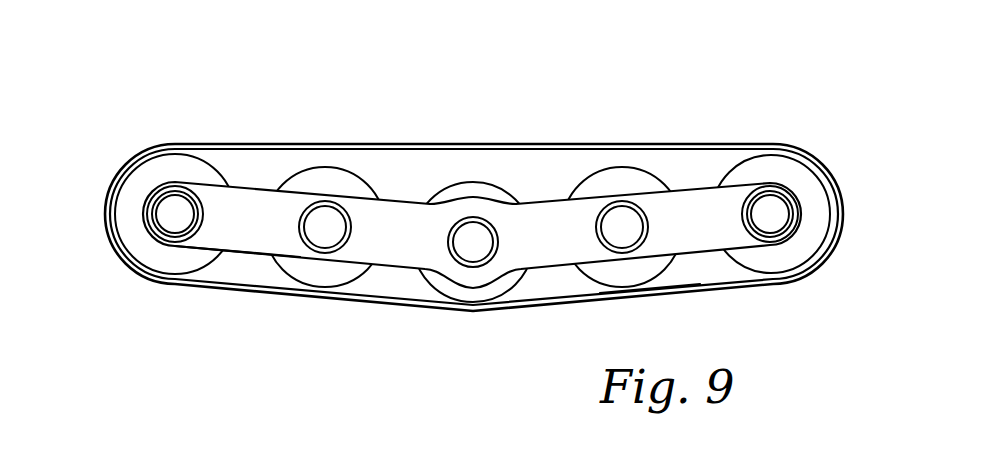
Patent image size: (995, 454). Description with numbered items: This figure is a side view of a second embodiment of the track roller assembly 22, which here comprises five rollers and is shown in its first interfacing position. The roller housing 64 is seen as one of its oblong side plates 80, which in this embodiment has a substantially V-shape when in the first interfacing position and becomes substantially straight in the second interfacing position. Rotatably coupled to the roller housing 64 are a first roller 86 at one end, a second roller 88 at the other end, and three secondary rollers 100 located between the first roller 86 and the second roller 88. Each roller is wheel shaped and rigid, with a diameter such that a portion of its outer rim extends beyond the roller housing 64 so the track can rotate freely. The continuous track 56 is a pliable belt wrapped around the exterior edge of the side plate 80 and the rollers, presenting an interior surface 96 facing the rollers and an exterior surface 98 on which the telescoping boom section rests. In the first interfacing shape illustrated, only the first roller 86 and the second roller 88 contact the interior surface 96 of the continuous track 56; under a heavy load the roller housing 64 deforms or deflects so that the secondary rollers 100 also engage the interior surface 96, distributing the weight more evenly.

The track roller assembly 22 is at (463, 177).
The continuous track 56 is at (394, 143).
The roller housing 64 is at (247, 252).
The side plate 80 is at (250, 196).
The first roller 86 is at (137, 182).
The second roller 88 is at (822, 200).
The interior surface 96 is at (694, 255).
The exterior surface 98 is at (676, 125).
The secondary roller 100 is at (314, 174).